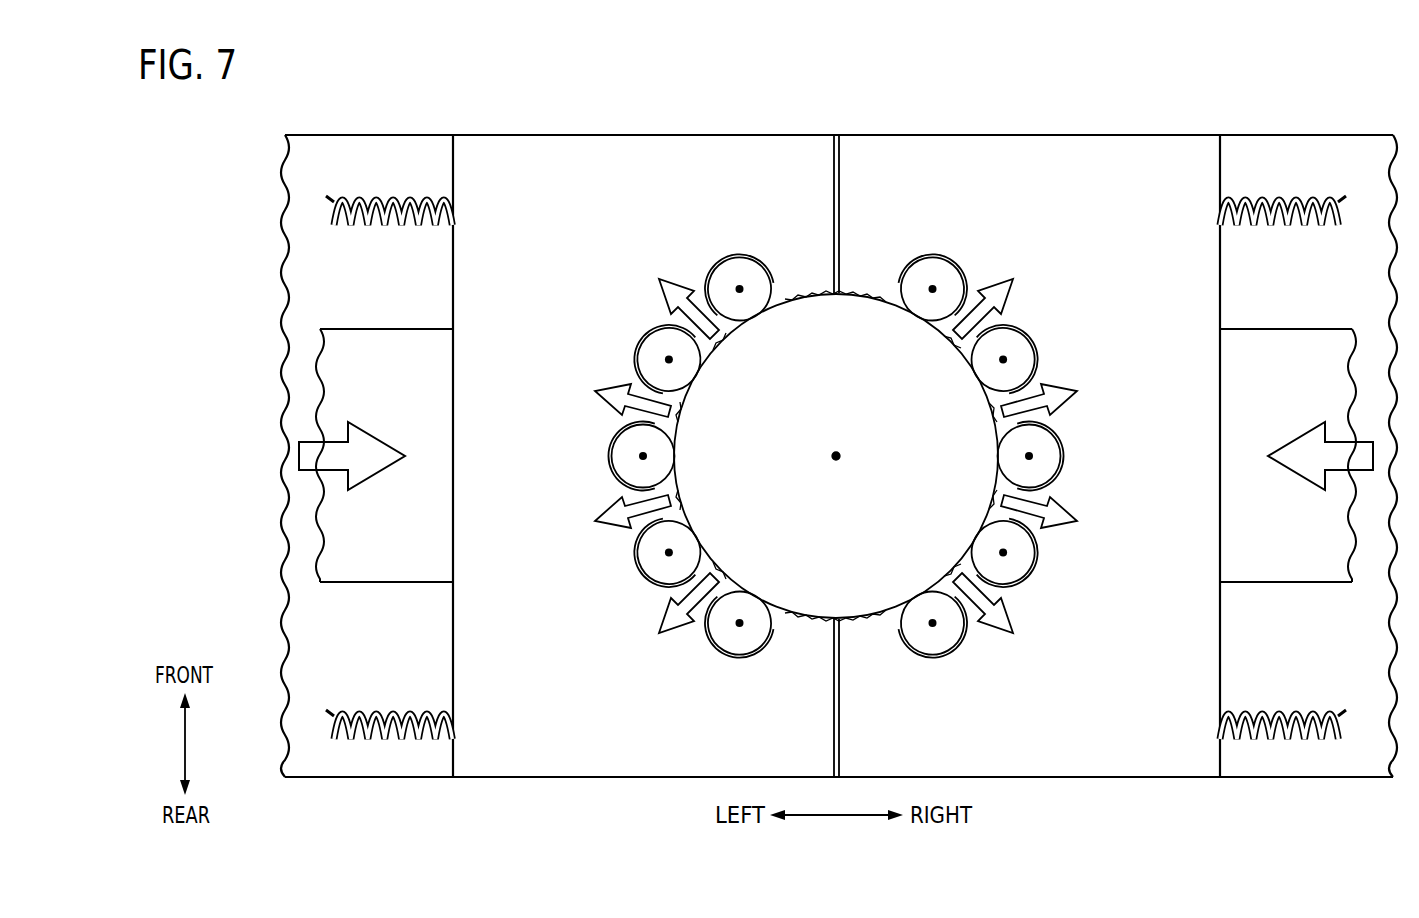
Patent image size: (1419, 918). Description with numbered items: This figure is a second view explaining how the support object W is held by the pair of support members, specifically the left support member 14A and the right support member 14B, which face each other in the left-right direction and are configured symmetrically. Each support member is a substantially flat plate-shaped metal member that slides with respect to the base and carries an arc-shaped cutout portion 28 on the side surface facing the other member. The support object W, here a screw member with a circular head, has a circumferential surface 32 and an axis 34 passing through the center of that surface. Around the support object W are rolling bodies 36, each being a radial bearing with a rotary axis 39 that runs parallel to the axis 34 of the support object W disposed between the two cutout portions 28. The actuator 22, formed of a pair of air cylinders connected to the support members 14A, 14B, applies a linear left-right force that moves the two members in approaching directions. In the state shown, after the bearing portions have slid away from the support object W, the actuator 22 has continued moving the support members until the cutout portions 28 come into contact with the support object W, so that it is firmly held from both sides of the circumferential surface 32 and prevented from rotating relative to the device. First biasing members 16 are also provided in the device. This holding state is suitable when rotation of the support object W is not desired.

The left support member 14A is at (770, 153).
The right support member 14B is at (927, 152).
The first biasing member 16 is at (343, 232).
The actuator 22 is at (398, 323).
The cutout portion 28 is at (805, 257).
The circumferential surface 32 is at (865, 330).
The axis 34 is at (841, 455).
The rolling body 36 is at (733, 265).
The axis 39 is at (741, 291).
The support object W is at (808, 612).